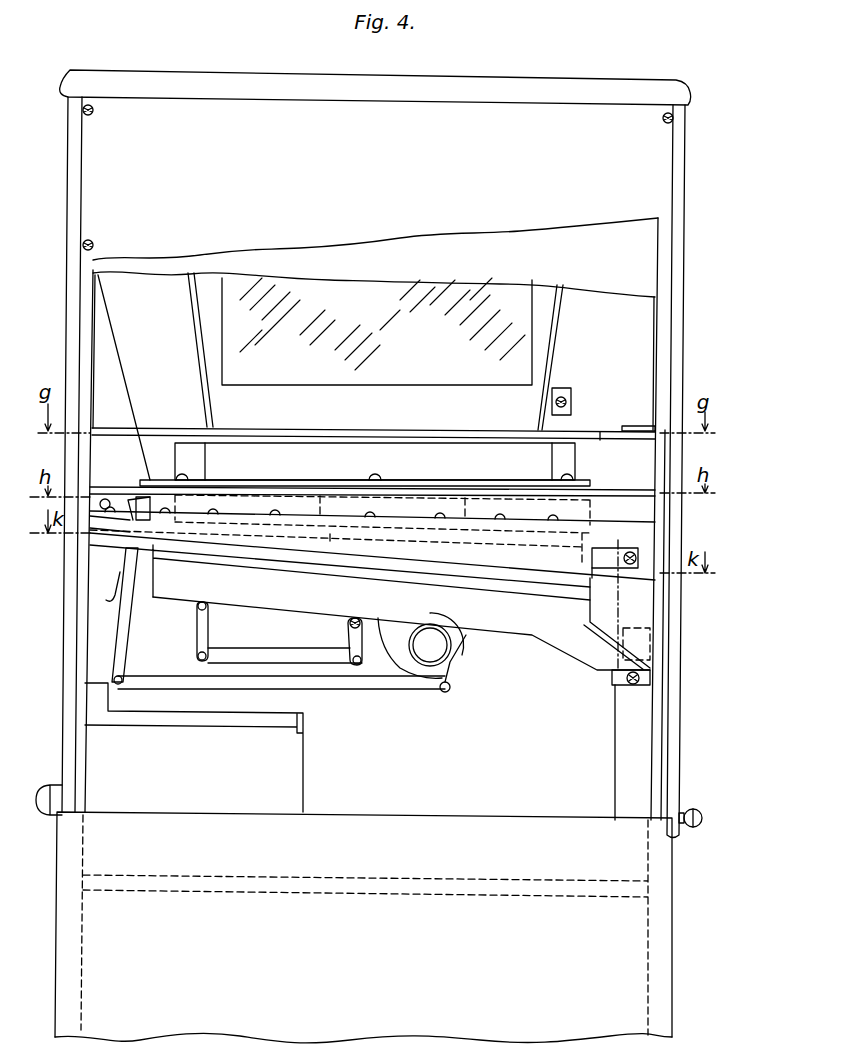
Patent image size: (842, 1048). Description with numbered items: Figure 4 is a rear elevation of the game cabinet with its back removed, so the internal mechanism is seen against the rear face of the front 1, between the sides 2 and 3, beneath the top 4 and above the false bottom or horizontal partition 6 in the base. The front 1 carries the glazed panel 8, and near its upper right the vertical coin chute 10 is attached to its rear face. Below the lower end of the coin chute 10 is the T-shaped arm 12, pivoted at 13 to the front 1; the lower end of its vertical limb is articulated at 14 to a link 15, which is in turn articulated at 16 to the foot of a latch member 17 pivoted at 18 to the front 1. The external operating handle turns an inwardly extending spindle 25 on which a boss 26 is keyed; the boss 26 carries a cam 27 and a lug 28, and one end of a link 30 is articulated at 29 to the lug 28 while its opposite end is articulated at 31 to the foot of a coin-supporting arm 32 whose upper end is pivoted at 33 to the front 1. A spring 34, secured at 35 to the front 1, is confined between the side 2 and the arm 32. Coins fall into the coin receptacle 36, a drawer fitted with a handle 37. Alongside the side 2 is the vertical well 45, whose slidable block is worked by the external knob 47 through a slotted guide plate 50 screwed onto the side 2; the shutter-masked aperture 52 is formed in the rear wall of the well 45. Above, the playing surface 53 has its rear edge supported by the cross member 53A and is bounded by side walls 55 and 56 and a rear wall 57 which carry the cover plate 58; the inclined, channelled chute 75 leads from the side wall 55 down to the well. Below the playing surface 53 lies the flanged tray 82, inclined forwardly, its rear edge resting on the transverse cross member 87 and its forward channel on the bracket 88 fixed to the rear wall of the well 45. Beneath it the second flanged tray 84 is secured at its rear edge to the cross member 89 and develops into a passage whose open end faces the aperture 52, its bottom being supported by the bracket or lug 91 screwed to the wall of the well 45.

The front 1 is at (371, 519).
The side 2 is at (66, 723).
The side 3 is at (668, 758).
The top 4 is at (360, 97).
The false bottom or horizontal partition 6 is at (372, 890).
The glazed panel 8 is at (368, 370).
The coin chute 10 is at (153, 376).
The T-shaped arm 12 is at (208, 628).
The pivot 13 is at (198, 604).
The articulation 14 is at (198, 656).
The link 15 is at (256, 657).
The articulation 16 is at (356, 668).
The latch member 17 is at (350, 640).
The pivot 18 is at (348, 624).
The spindle 25 is at (434, 647).
The boss 26 is at (448, 658).
The cam 27 is at (392, 632).
The lug 28 is at (449, 660).
The articulation 29 is at (444, 692).
The link 30 is at (327, 690).
The articulation 31 is at (122, 680).
The coin-supporting arm 32 is at (125, 612).
The pivot 33 is at (140, 495).
The spring 34 is at (119, 578).
The securing point 35 is at (103, 500).
The coin receptacle 36 is at (194, 747).
The handle 37 is at (44, 800).
The vertical well 45 is at (630, 735).
The external knob 47 is at (693, 828).
The slotted guide plate 50 is at (664, 612).
The aperture 52 is at (655, 643).
The playing surface 53 is at (320, 481).
The cross member 53A is at (632, 428).
The side wall 55 is at (180, 456).
The side wall 56 is at (552, 458).
The rear wall 57 is at (372, 468).
The cover plate 58 is at (262, 430).
The chute 75 is at (598, 436).
The flanged tray 82 is at (393, 512).
The second flanged tray 84 is at (317, 555).
The cross member 87 is at (108, 518).
The bracket 88 is at (618, 558).
The cross member 89 is at (632, 588).
The bracket or lug 91 is at (640, 678).